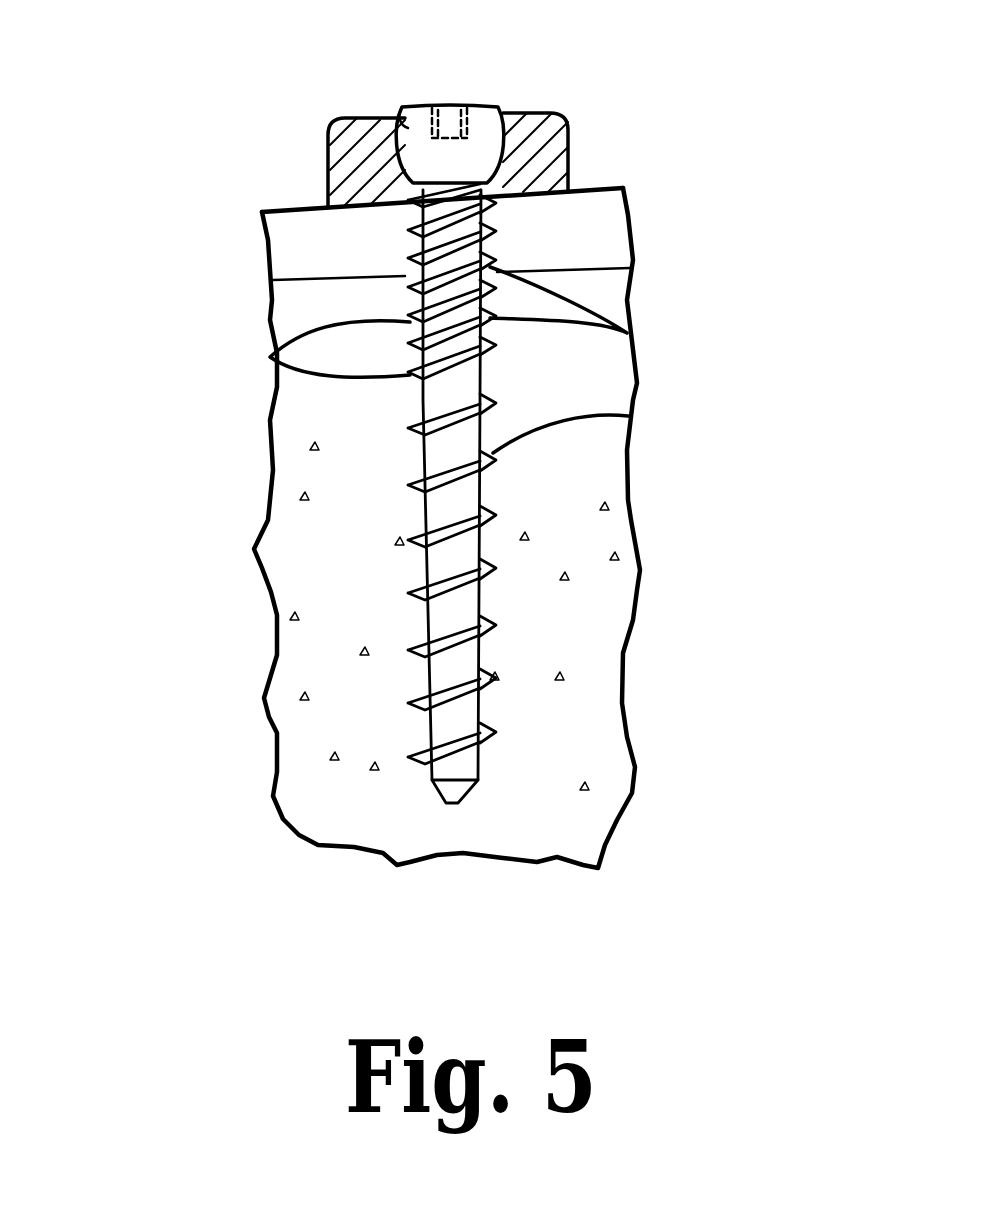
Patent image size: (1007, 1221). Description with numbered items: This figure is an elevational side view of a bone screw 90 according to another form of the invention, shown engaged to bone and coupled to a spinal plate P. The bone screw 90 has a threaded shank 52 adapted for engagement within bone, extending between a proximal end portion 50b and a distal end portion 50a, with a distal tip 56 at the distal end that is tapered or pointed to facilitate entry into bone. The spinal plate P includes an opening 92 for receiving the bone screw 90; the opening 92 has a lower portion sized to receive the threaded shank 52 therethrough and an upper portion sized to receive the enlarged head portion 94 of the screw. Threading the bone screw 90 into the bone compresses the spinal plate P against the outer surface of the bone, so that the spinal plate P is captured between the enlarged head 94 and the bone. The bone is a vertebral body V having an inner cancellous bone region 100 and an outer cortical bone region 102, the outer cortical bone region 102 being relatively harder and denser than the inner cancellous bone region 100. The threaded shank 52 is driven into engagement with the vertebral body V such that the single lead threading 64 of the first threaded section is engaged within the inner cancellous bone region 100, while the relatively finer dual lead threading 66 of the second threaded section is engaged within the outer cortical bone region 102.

The bone screw 90 is at (128, 192).
The opening 92 is at (407, 104).
The enlarged head portion 94 is at (510, 72).
The spinal plate P is at (565, 133).
The proximal end portion 50b is at (348, 214).
The distal end portion 50a is at (524, 775).
The threaded shank portion 52 is at (338, 553).
The distal tip 56 is at (446, 790).
The first threading 64 is at (270, 357).
The finer threading 66 is at (630, 338).
The vertebral body V is at (207, 423).
The inner cancellous bone region 100 is at (616, 505).
The outer cortical bone region 102 is at (616, 228).